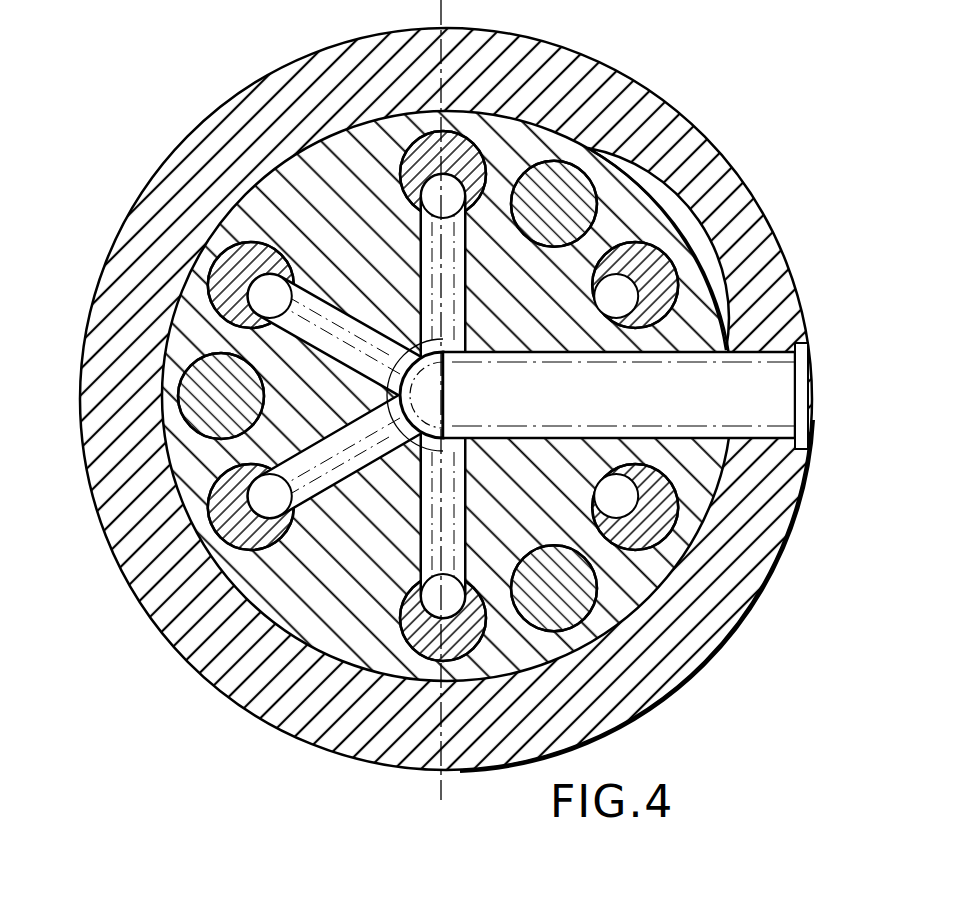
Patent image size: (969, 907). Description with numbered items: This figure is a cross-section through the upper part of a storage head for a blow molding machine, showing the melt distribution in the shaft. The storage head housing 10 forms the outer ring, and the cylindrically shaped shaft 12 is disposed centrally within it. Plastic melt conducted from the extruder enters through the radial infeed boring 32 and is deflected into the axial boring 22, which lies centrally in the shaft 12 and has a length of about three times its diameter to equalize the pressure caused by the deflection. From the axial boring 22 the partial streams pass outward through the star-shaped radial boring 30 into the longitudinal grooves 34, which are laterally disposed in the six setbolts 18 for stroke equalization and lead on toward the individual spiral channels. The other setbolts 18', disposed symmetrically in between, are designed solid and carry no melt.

The storage head housing 10 is at (713, 178).
The shaft 12 is at (548, 324).
The setbolts 18 is at (434, 350).
The setbolts 18' is at (383, 339).
The axial boring 22 is at (418, 440).
The star-shaped radial boring 30 is at (353, 327).
The radial infeed boring 32 is at (696, 372).
The longitudinal grooves 34 is at (262, 302).